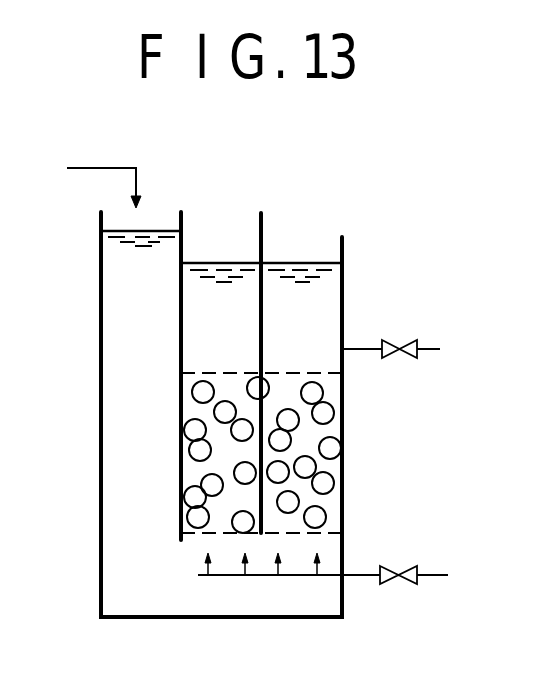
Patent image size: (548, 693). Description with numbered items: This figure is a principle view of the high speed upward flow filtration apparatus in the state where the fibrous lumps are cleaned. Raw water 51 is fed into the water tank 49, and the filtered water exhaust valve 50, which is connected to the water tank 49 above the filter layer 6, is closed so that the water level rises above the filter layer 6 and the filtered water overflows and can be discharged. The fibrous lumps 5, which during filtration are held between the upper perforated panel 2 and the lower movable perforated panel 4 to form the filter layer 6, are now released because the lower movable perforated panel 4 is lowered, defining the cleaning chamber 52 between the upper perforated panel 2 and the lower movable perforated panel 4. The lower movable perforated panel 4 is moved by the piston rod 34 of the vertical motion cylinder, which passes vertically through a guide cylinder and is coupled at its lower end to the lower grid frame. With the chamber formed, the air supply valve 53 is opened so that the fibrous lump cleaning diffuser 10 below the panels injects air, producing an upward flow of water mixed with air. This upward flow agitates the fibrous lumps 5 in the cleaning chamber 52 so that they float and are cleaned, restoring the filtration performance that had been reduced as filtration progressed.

The water tank 49 is at (101, 547).
The raw water 51 is at (78, 168).
The piston rod 34 is at (262, 233).
The upper perforated panel 2 is at (233, 373).
The cleaning chamber 52 is at (327, 468).
The fibrous lumps 5 is at (195, 443).
The filter layer 6 is at (316, 438).
The lower movable perforated panel 4 is at (305, 533).
The fibrous lump cleaning diffuser 10 is at (228, 577).
The air supply valve 53 is at (412, 584).
The filtered water exhaust valve 50 is at (408, 340).